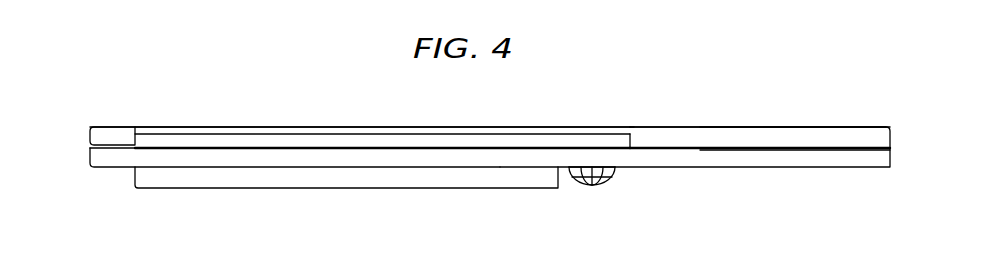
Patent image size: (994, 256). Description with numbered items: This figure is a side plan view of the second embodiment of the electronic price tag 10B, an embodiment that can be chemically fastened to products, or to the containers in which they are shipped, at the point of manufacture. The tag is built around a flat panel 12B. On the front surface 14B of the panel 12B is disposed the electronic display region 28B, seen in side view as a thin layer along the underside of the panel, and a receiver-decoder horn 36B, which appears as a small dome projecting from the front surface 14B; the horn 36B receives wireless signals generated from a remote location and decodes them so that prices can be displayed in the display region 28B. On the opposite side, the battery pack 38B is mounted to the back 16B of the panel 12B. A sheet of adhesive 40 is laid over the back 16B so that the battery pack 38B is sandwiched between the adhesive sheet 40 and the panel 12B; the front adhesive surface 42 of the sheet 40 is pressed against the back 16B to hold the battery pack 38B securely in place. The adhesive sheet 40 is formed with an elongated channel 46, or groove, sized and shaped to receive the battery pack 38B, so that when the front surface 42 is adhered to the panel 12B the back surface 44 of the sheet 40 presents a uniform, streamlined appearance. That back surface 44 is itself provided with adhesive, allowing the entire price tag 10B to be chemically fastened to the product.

The price tag 10B is at (578, 117).
The battery pack 38B is at (135, 127).
The adhesive sheet 40 is at (341, 133).
The elongated channel 46 is at (633, 137).
The back of the panel 16B is at (770, 147).
The back surface of the adhesive sheet 44 is at (855, 127).
The front adhesive surface 42 is at (818, 150).
The panel 12B is at (110, 158).
The front surface of the panel 14B is at (745, 168).
The electronic display region 28B is at (307, 188).
The receiver-decoder horn 36B is at (591, 185).